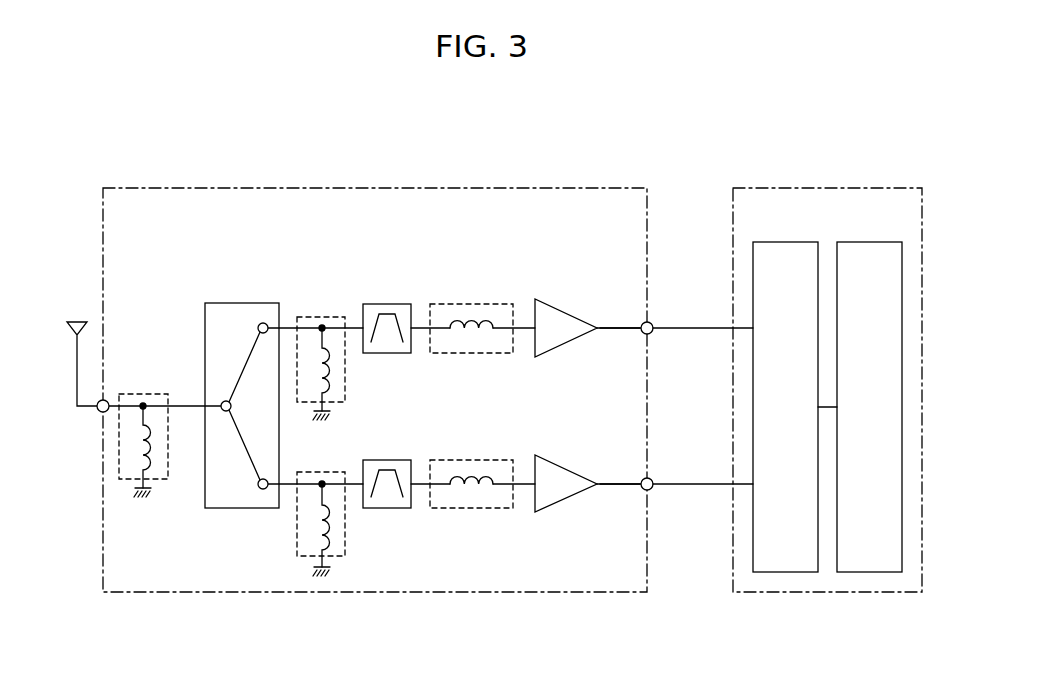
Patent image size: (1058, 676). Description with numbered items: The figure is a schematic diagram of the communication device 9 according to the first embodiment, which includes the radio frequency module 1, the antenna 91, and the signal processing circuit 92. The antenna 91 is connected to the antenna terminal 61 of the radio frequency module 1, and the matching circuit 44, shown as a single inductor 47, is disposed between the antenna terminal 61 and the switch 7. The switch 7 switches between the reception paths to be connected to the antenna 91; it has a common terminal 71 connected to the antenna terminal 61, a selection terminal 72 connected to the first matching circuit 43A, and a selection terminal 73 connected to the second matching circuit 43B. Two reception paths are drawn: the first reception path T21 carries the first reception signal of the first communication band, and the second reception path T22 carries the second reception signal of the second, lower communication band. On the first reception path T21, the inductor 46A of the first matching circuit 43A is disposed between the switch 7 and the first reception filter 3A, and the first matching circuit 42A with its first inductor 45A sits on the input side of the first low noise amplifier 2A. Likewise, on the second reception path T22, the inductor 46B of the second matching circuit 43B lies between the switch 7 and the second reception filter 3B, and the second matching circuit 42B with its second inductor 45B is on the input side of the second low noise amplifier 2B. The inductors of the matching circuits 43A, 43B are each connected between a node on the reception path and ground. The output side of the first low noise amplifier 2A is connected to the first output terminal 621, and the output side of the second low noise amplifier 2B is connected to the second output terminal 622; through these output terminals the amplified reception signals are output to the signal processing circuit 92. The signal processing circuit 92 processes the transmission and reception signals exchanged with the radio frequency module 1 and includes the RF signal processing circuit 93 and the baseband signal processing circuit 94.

The radio frequency module 1 is at (597, 187).
The first low noise amplifier 2A is at (560, 316).
The second low noise amplifier 2B is at (560, 472).
The first reception filter 3A is at (384, 303).
The second reception filter 3B is at (372, 459).
The switch 7 is at (211, 302).
The communication device 9 is at (803, 146).
The first matching circuit 42A is at (480, 303).
The second matching circuit 42B is at (456, 459).
The first matching circuit 43A is at (309, 315).
The second matching circuit 43B is at (296, 543).
The matching circuit 44 is at (143, 392).
The first inductor 45A is at (476, 333).
The second inductor 45B is at (472, 489).
The inductor 46A is at (330, 374).
The inductor 46B is at (330, 532).
The inductor 47 is at (150, 455).
The antenna terminal 61 is at (99, 411).
The common terminal 71 is at (226, 400).
The selection terminal 72 is at (258, 327).
The selection terminal 73 is at (257, 486).
The antenna 91 is at (76, 321).
The signal processing circuit 92 is at (866, 186).
The RF signal processing circuit 93 is at (797, 573).
The baseband signal processing circuit 94 is at (876, 573).
The first output terminal 621 is at (653, 334).
The second output terminal 622 is at (653, 490).
The first reception path T21 is at (613, 336).
The second reception path T22 is at (608, 491).